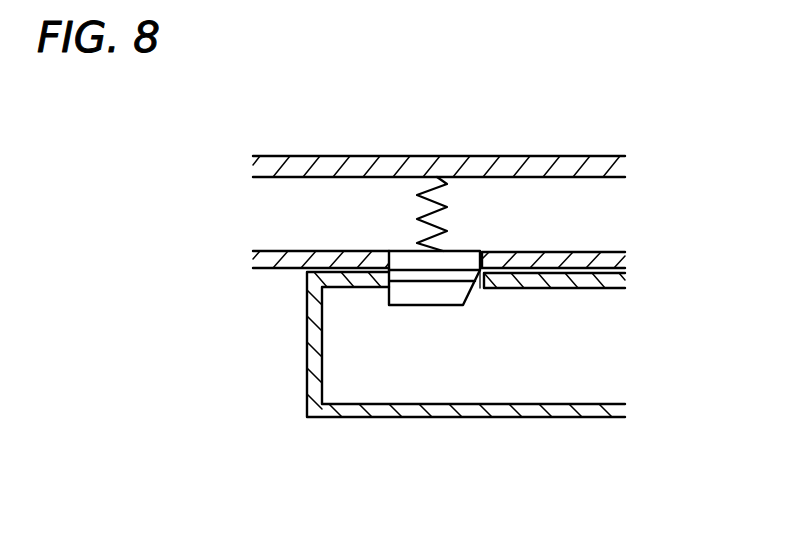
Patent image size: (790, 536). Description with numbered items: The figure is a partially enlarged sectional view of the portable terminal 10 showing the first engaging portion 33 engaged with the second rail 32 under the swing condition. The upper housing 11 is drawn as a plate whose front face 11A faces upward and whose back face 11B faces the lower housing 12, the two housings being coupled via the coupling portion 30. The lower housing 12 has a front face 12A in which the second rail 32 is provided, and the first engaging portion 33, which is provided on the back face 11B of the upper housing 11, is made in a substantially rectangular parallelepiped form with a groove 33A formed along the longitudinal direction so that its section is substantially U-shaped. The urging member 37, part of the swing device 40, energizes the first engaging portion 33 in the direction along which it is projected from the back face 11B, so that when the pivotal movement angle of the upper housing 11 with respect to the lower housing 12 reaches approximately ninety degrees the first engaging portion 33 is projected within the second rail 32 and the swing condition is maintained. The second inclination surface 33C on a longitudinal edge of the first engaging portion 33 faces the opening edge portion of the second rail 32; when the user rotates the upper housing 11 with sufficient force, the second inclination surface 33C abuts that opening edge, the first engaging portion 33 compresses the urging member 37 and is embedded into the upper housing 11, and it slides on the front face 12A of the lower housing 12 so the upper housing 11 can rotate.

The portable terminal 10 is at (612, 144).
The upper housing 11 is at (297, 152).
The front face 11A is at (347, 152).
The back face 11B is at (273, 268).
The lower housing 12 is at (307, 357).
The front face 12A is at (565, 275).
The coupling portion 30 is at (418, 330).
The second rail 32 is at (478, 288).
The first engaging portion 33 is at (462, 260).
The groove 33A is at (410, 272).
The second inclination surface 33C is at (467, 307).
The urging member 37 is at (434, 183).
The swing device 40 is at (362, 330).